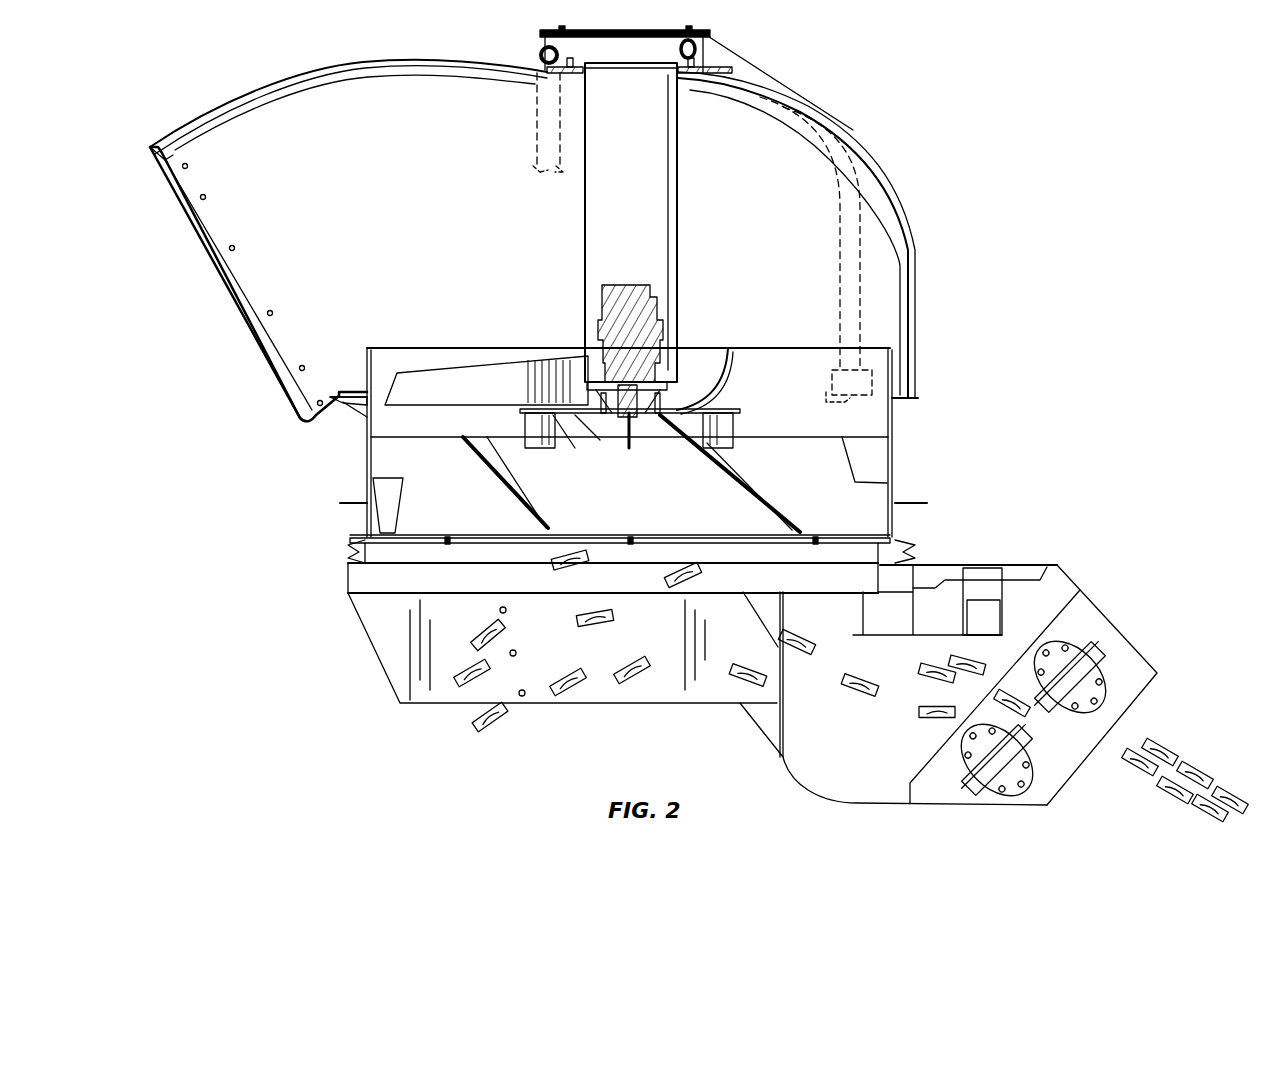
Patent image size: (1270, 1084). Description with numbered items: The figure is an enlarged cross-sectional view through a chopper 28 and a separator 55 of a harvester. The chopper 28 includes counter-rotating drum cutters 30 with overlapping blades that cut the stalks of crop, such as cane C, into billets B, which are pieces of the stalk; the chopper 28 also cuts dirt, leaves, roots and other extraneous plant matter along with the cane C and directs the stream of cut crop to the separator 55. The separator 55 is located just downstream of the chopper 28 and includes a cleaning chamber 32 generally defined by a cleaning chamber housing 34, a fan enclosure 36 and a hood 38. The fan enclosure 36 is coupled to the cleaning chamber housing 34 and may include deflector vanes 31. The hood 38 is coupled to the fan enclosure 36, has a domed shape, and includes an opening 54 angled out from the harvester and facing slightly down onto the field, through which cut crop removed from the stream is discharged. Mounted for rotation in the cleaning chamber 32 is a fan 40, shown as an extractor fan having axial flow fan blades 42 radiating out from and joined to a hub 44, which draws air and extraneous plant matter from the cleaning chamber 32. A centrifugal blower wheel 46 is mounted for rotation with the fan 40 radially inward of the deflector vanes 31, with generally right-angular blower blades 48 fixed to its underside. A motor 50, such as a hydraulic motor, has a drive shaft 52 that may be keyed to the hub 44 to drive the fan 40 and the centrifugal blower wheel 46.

The chopper 28 is at (1122, 673).
The counter-rotating drum cutters 30 is at (1010, 780).
The deflector vanes 31 is at (490, 470).
The cleaning chamber 32 is at (550, 615).
The cleaning chamber housing 34 is at (358, 618).
The fan enclosure 36 is at (367, 452).
The hood 38 is at (870, 153).
The fan 40 is at (528, 337).
The axial flow fan blades 42 is at (522, 378).
The hub 44 is at (596, 395).
The centrifugal blower wheel 46 is at (688, 443).
The blower blades 48 is at (582, 428).
The motor 50 is at (640, 302).
The drive shaft 52 is at (628, 415).
The opening 54 is at (212, 270).
The separator 55 is at (1090, 152).
The billets B is at (917, 717).
The cane C is at (1153, 767).